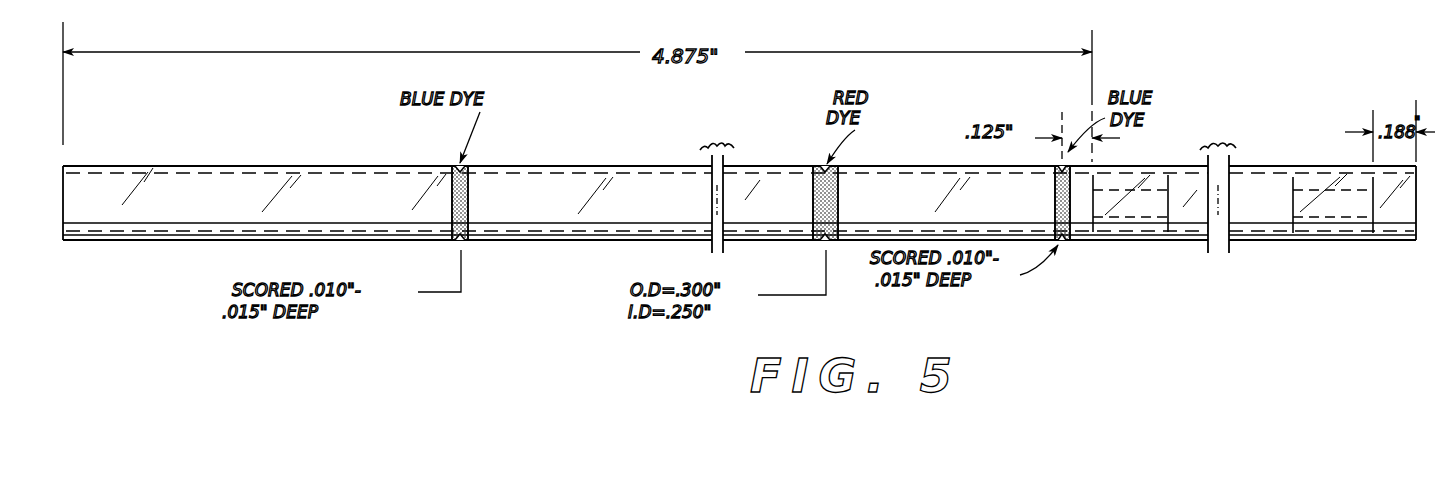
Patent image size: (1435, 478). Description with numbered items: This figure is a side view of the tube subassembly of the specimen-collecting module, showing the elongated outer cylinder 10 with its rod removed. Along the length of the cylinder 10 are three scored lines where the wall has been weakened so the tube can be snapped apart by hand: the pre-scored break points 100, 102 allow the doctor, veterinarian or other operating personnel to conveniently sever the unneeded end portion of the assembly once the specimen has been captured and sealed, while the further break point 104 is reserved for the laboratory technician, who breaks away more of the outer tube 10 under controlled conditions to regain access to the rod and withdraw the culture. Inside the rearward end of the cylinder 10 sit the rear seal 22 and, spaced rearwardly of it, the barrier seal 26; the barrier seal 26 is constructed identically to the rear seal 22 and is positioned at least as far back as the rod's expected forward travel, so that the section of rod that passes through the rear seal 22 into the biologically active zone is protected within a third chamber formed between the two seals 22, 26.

The cylinder 10 is at (607, 166).
The pre-scored break point 100 is at (457, 244).
The break point 104 is at (822, 244).
The pre-scored break point 102 is at (1066, 246).
The rear seal 22 is at (1150, 200).
The barrier seal 26 is at (1338, 224).